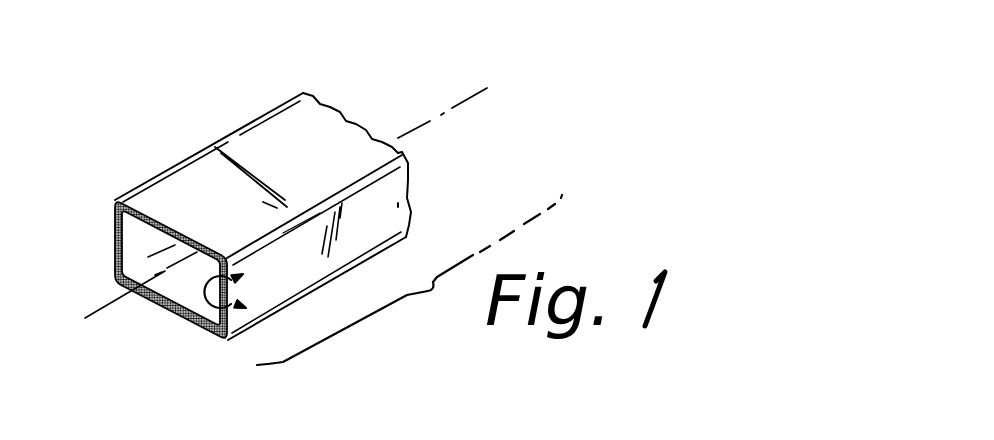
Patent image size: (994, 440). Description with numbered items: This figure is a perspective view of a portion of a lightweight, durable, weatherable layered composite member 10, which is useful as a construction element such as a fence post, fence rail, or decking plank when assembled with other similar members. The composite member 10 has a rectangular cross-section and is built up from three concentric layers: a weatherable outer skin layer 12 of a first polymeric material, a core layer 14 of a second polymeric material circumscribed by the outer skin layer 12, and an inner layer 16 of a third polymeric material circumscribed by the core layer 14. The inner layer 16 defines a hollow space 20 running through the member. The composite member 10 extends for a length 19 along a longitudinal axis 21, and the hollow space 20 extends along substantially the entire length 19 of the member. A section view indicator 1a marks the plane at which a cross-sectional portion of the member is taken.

The layered composite member 10 is at (136, 100).
The outer skin layer 12 is at (257, 146).
The core layer 14 is at (104, 242).
The inner layer 16 is at (183, 297).
The hollow space 20 is at (133, 278).
The length 19 is at (409, 280).
The longitudinal axis 21 is at (427, 125).
The section view indicator 1a is at (247, 285).